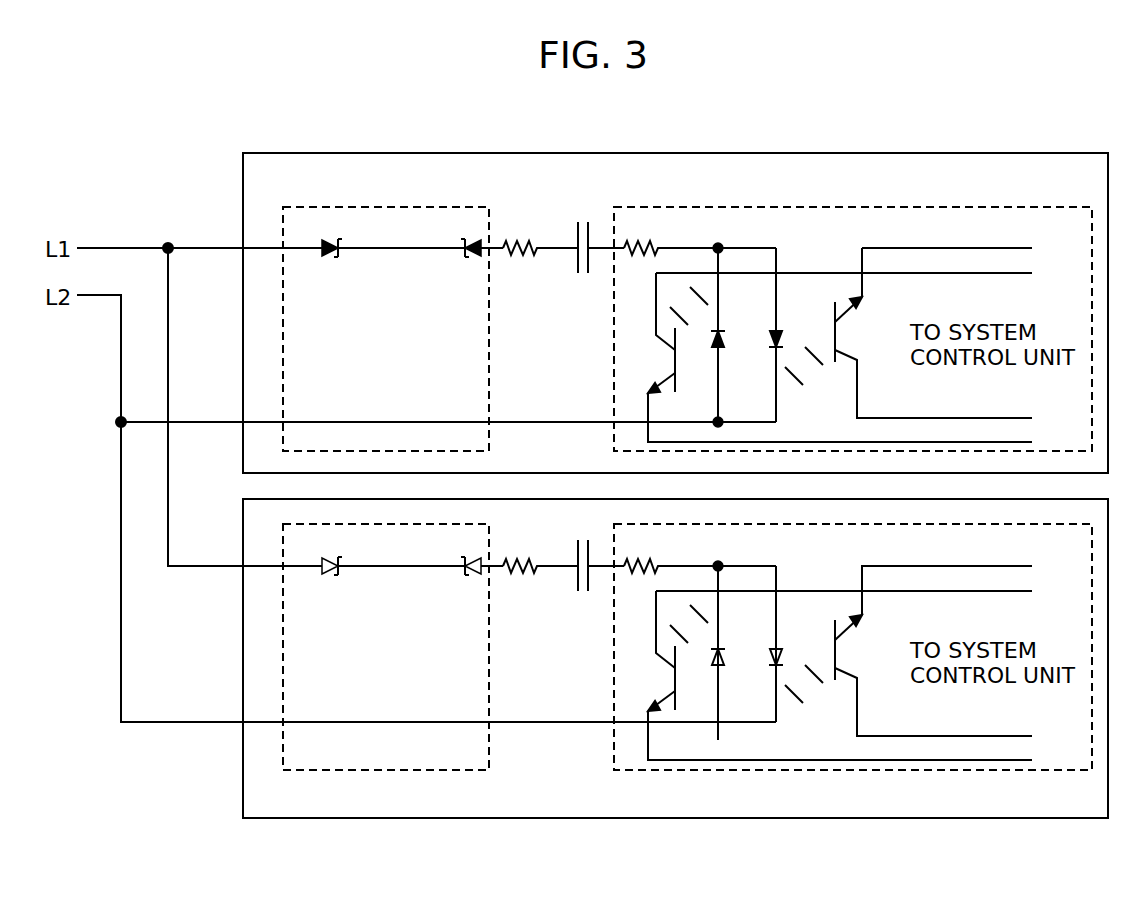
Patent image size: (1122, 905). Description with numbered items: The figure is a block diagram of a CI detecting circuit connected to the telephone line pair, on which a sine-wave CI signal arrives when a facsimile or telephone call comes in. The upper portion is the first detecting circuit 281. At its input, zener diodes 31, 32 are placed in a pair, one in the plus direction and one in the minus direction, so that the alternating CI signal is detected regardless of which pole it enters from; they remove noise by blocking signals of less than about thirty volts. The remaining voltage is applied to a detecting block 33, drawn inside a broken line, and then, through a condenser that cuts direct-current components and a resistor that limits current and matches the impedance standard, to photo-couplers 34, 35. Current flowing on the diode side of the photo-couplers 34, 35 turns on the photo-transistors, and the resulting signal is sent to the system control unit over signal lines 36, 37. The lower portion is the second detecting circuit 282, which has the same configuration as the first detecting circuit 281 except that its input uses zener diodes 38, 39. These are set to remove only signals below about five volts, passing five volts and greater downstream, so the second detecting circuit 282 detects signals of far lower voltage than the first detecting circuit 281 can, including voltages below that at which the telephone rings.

The first detecting circuit 281 is at (896, 153).
The second detecting circuit 282 is at (896, 818).
The zener diode 31 is at (330, 254).
The zener diode 32 is at (473, 254).
The detecting block 33 is at (614, 326).
The photo-coupler 34 is at (675, 377).
The photo-coupler 35 is at (835, 327).
The signal line 36 is at (1015, 246).
The signal line 37 is at (1015, 275).
The zener diode 38 is at (330, 572).
The zener diode 39 is at (473, 572).